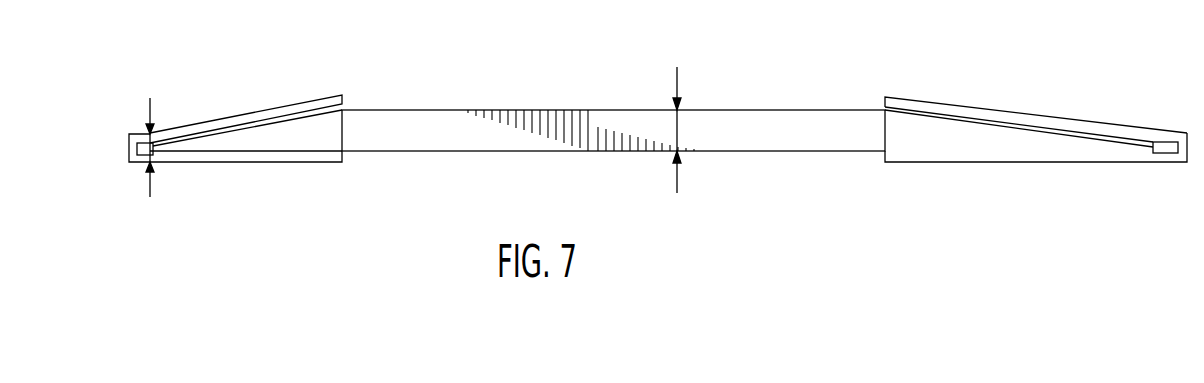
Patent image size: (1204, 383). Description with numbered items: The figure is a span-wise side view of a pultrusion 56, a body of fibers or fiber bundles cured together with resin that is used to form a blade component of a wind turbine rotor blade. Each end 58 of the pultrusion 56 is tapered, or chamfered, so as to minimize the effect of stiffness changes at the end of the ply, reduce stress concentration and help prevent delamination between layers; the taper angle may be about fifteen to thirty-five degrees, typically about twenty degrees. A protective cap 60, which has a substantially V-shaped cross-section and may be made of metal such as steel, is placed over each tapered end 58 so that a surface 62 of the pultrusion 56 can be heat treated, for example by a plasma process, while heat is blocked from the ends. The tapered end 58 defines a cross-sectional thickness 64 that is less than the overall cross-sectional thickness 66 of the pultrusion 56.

The pultrusion 56 is at (970, 70).
The tapered end 58 is at (155, 151).
The protective cap 60 is at (215, 115).
The surface 62 is at (476, 130).
The cross-sectional thickness 64 is at (137, 147).
The overall cross-sectional thickness 66 is at (678, 130).